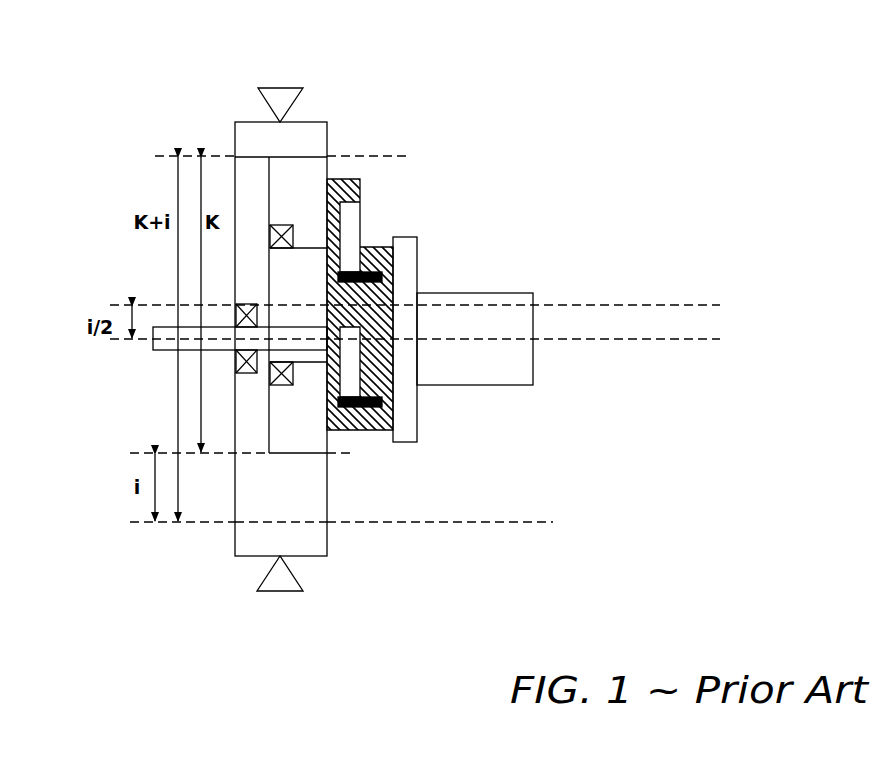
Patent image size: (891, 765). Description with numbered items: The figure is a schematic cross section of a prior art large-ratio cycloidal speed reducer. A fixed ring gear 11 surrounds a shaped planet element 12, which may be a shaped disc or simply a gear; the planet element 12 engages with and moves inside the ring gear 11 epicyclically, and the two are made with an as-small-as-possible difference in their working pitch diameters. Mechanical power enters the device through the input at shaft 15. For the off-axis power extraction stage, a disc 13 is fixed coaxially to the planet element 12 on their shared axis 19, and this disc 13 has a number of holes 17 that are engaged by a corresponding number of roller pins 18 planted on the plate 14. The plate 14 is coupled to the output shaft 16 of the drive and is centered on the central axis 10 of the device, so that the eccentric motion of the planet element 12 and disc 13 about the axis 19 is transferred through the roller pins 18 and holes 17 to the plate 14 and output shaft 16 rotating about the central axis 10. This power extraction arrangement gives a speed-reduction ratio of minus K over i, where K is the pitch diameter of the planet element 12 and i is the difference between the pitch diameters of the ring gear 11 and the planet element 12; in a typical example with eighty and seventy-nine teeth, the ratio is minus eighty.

The central axis 10 is at (565, 342).
The fixed ring gear 11 is at (247, 133).
The planet element 12 is at (313, 170).
The disc 13 is at (363, 178).
The plate 14 is at (420, 243).
The input shaft 15 is at (167, 327).
The output shaft 16 is at (518, 318).
The holes 17 is at (350, 372).
The roller pins 18 is at (378, 430).
The axis 19 is at (562, 305).